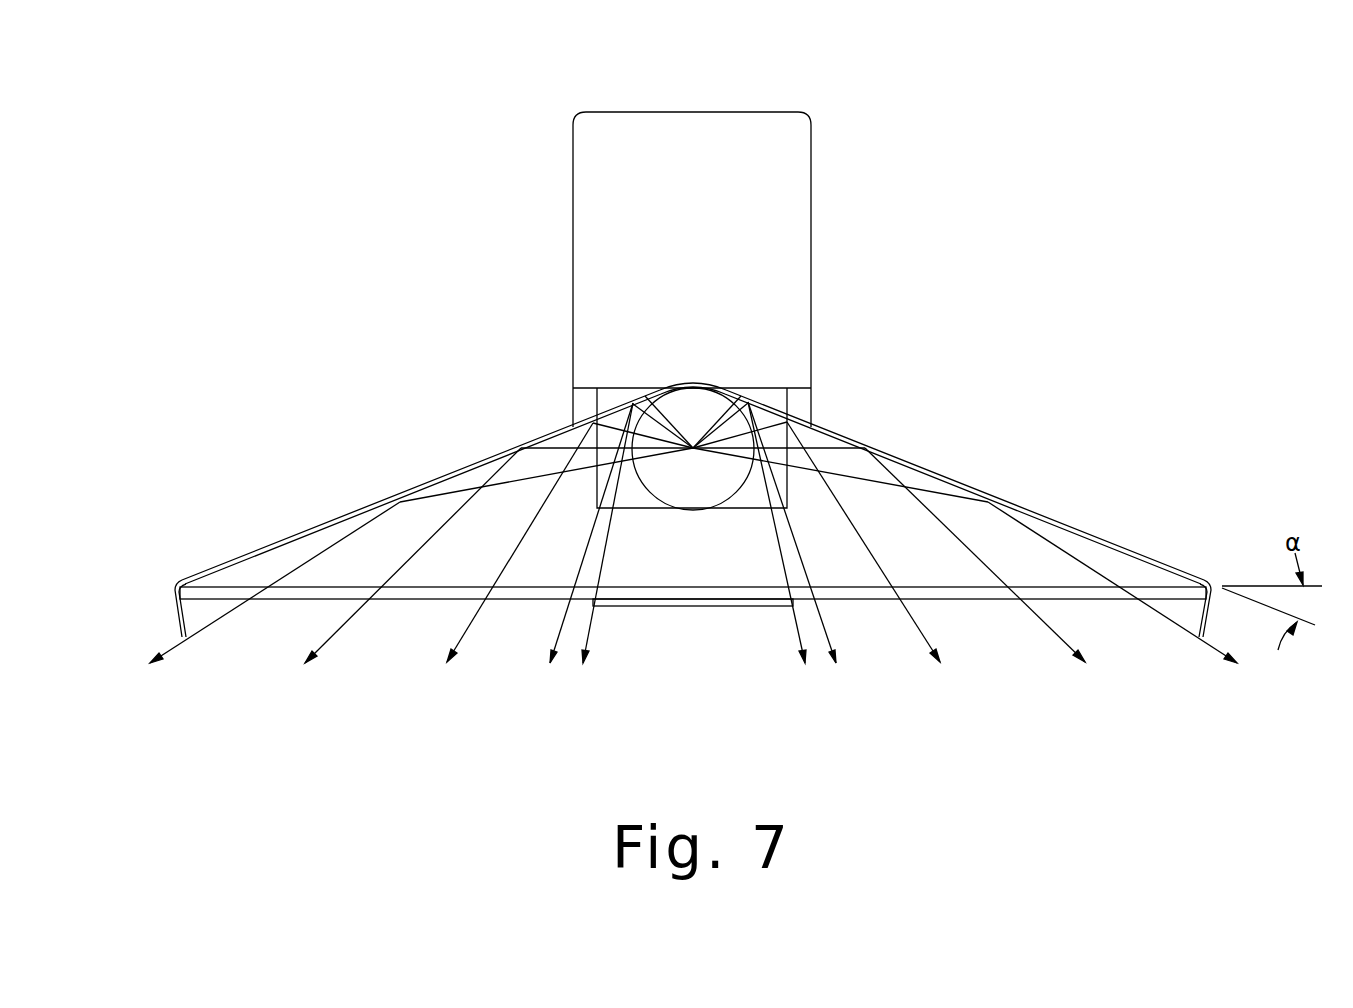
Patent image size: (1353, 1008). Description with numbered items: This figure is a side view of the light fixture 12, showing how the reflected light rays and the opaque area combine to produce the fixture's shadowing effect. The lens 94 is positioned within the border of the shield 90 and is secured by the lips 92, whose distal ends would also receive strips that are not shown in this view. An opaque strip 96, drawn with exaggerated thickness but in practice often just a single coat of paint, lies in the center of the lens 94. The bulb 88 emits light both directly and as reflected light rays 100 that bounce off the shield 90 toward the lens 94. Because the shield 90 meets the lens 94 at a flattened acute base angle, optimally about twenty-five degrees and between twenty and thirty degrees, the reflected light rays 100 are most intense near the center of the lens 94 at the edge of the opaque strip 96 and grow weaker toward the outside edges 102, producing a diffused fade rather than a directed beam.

The fixture 12 is at (528, 153).
The bulb 88 is at (647, 488).
The shield 90 is at (357, 512).
The lips 92 is at (175, 628).
The lens 94 is at (415, 602).
The opaque strip 96 is at (662, 608).
The reflected light rays 100 is at (475, 622).
The outside edges 102 is at (205, 655).